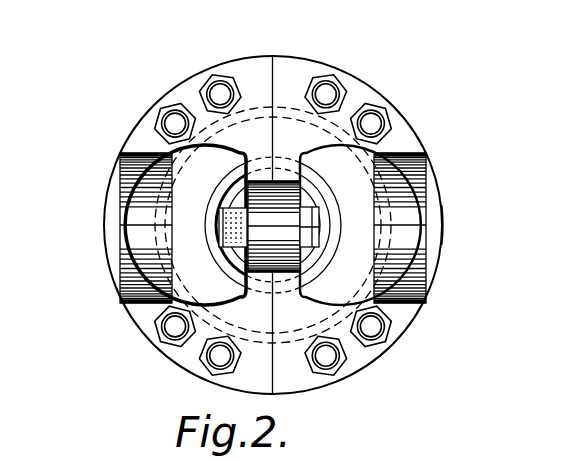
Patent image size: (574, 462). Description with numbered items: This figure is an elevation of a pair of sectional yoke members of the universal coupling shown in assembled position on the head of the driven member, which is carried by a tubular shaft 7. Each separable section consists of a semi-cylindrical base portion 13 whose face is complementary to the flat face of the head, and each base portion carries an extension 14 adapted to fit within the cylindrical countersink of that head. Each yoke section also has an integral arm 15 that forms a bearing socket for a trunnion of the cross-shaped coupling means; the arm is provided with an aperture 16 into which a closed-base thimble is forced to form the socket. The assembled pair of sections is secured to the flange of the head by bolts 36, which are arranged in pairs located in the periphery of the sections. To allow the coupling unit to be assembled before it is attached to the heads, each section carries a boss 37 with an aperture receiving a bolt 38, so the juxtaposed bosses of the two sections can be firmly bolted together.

The tubular shaft 7 is at (236, 185).
The semi-cylindrical base portion 13 is at (258, 70).
The extension 14 is at (285, 130).
The integral arm 15 is at (135, 222).
The aperture 16 is at (442, 250).
The bolts 36 is at (371, 124).
The boss 37 is at (277, 258).
The bolt 38 is at (309, 222).